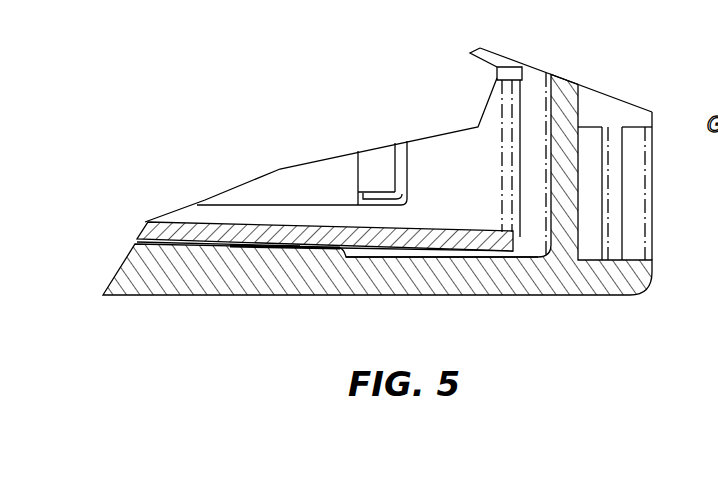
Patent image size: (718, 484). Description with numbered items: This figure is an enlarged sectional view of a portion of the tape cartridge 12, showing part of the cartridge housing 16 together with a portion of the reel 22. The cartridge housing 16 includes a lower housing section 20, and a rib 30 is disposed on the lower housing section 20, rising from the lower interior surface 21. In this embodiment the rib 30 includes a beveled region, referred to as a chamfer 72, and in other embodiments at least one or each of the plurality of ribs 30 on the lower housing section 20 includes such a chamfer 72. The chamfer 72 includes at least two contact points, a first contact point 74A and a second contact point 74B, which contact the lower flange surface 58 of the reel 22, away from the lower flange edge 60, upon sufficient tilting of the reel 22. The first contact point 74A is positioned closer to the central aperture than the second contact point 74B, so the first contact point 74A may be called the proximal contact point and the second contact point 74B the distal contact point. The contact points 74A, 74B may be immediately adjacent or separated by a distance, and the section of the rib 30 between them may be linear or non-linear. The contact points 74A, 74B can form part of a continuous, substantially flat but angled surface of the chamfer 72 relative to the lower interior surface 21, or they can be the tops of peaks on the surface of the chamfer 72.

The cartridge 12 is at (573, 68).
The cartridge housing 16 is at (645, 275).
The lower housing section 20 is at (512, 285).
The lower interior surface 21 is at (388, 262).
The reel 22 is at (437, 233).
The rib 30 is at (306, 252).
The lower flange surface 58 is at (433, 256).
The lower flange edge 60 is at (514, 242).
The chamfer 72 is at (332, 252).
The first contact point 74A is at (306, 250).
The second contact point 74B is at (334, 250).